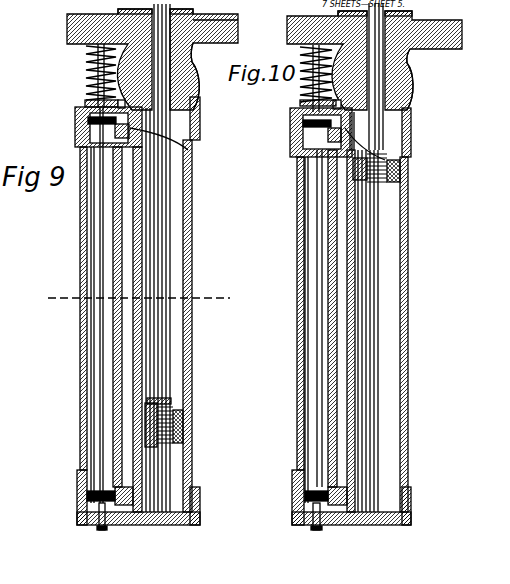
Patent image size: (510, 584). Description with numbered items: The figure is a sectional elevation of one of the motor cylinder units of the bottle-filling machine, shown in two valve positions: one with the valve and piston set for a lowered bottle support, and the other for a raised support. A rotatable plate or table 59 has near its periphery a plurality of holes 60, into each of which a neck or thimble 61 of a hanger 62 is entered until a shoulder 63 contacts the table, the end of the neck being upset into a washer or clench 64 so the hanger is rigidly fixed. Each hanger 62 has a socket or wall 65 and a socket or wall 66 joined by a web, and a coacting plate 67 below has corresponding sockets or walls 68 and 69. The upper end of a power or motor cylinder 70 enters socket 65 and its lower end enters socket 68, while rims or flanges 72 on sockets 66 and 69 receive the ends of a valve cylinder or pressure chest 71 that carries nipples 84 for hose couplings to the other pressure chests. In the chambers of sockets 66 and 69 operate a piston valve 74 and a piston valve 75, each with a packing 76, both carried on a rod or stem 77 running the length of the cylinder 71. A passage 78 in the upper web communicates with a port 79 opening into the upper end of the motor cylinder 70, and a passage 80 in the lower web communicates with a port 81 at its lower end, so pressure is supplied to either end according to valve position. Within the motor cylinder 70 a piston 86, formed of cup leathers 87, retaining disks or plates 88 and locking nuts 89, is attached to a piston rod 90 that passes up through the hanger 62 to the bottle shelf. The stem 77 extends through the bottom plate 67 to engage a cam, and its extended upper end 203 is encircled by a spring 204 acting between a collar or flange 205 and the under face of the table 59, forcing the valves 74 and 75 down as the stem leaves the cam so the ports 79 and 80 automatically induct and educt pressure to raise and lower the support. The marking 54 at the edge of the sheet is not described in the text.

In FIG. 9, the frame part 54 is at (10, 542).
In FIG. 9, the plate or table 59 is at (68, 28).
In FIG. 9, the hole 60 is at (238, 36).
In FIG. 10, the hole 60 is at (462, 36).
In FIG. 9, the neck or thimble 61 is at (238, 22).
In FIG. 9, the hanger 62 is at (200, 86).
In FIG. 10, the hanger 62 is at (412, 80).
In FIG. 9, the shoulder 63 is at (194, 60).
In FIG. 10, the shoulder 63 is at (409, 60).
In FIG. 9, the washer or clench 64 is at (194, 11).
In FIG. 10, the washer or clench 64 is at (412, 13).
In FIG. 9, the socket or wall 65 is at (200, 128).
In FIG. 10, the socket or wall 65 is at (411, 130).
In FIG. 9, the socket or wall 66 is at (88, 121).
In FIG. 10, the socket or wall 66 is at (303, 123).
In FIG. 9, the plate 67 is at (160, 525).
In FIG. 10, the plate 67 is at (388, 525).
In FIG. 9, the socket or wall 68 is at (200, 508).
In FIG. 10, the socket or wall 68 is at (411, 510).
In FIG. 9, the socket or wall 69 is at (87, 497).
In FIG. 10, the socket or wall 69 is at (305, 497).
In FIG. 9, the motor cylinder 70 is at (193, 270).
In FIG. 10, the motor cylinder 70 is at (407, 280).
In FIG. 9, the cylinder 71 is at (82, 254).
In FIG. 10, the cylinder 71 is at (298, 204).
In FIG. 9, the rim or flange 72 is at (80, 142).
In FIG. 10, the rim or flange 72 is at (299, 148).
In FIG. 9, the piston valve 74 is at (92, 102).
In FIG. 10, the piston valve 74 is at (303, 131).
In FIG. 9, the piston valve 75 is at (88, 506).
In FIG. 10, the piston valve 75 is at (300, 103).
In FIG. 9, the packing 76 is at (78, 110).
In FIG. 10, the packing 76 is at (300, 508).
In FIG. 9, the rod or stem 77 is at (100, 272).
In FIG. 10, the rod or stem 77 is at (316, 226).
In FIG. 9, the passage 78 is at (121, 104).
In FIG. 10, the passage 78 is at (336, 104).
In FIG. 9, the port 79 is at (190, 152).
In FIG. 10, the port 79 is at (330, 152).
In FIG. 9, the passage 80 is at (112, 530).
In FIG. 10, the passage 80 is at (330, 530).
In FIG. 9, the port 81 is at (146, 512).
In FIG. 10, the port 81 is at (354, 512).
In FIG. 9, the nipple 84 is at (86, 312).
In FIG. 10, the nipple 84 is at (316, 304).
In FIG. 9, the piston 86 is at (199, 426).
In FIG. 10, the piston 86 is at (402, 178).
In FIG. 9, the cup leathers 87 is at (184, 418).
In FIG. 9, the retaining disks or plates 88 is at (172, 410).
In FIG. 9, the locking nuts 89 is at (171, 402).
In FIG. 9, the piston rod 90 is at (166, 322).
In FIG. 10, the piston rod 90 is at (388, 150).
In FIG. 9, the extended end of stem 203 is at (86, 66).
In FIG. 9, the spring 204 is at (98, 88).
In FIG. 10, the collar or flange 205 is at (300, 95).